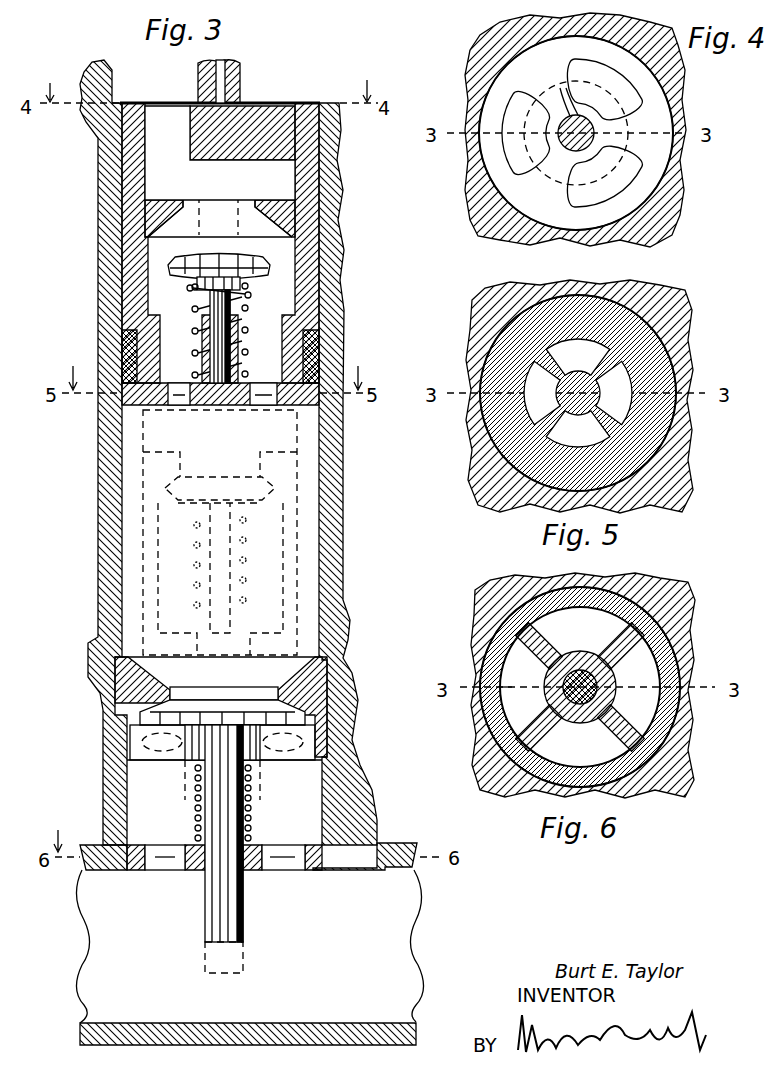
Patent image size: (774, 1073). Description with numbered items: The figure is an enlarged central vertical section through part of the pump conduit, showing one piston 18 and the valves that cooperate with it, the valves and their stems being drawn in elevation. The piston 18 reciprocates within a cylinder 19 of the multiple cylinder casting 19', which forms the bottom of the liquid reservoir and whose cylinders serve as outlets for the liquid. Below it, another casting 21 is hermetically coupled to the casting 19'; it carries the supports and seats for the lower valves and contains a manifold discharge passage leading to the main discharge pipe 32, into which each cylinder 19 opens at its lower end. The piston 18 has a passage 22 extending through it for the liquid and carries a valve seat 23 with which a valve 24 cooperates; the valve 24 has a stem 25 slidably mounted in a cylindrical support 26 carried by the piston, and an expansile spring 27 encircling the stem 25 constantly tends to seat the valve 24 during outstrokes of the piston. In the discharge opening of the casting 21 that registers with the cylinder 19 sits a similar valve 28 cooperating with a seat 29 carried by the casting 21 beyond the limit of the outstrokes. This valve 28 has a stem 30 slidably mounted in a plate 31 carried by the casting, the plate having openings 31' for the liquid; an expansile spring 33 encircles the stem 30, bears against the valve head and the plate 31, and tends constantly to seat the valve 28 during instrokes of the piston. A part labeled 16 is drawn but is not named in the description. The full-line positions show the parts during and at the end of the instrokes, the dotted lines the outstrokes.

In FIG. 3, the threaded nipple 16 is at (232, 66).
In FIG. 4, the threaded nipple 16 is at (563, 88).
In FIG. 3, the piston 18 is at (290, 104).
In FIG. 4, the piston 18 is at (576, 133).
In FIG. 5, the piston 18 is at (665, 372).
In FIG. 6, the piston 18 is at (670, 668).
In FIG. 3, the multiple cylinder casting 19' is at (243, 452).
In FIG. 4, the multiple cylinder casting 19' is at (590, 130).
In FIG. 5, the multiple cylinder casting 19' is at (611, 396).
In FIG. 3, the cylinder 19 is at (223, 532).
In FIG. 3, the casting 21 is at (110, 773).
In FIG. 6, the casting 21 is at (675, 598).
In FIG. 3, the passage 22 is at (240, 432).
In FIG. 4, the passage 22 is at (572, 134).
In FIG. 5, the passage 22 is at (578, 393).
In FIG. 3, the valve seat 23 is at (242, 242).
In FIG. 3, the valve 24 is at (232, 271).
In FIG. 3, the stem 25 is at (215, 300).
In FIG. 3, the cylindrical support 26 is at (206, 352).
In FIG. 3, the expansile spring 27 is at (240, 297).
In FIG. 3, the valve 28 is at (238, 700).
In FIG. 3, the seat 29 is at (148, 692).
In FIG. 3, the stem 30 is at (245, 909).
In FIG. 6, the stem 30 is at (600, 690).
In FIG. 3, the plate 31 is at (286, 845).
In FIG. 6, the plate 31 is at (519, 675).
In FIG. 3, the openings 31' is at (167, 845).
In FIG. 6, the openings 31' is at (578, 755).
In FIG. 3, the main discharge pipe 32 is at (385, 950).
In FIG. 3, the expansile spring 33 is at (252, 797).